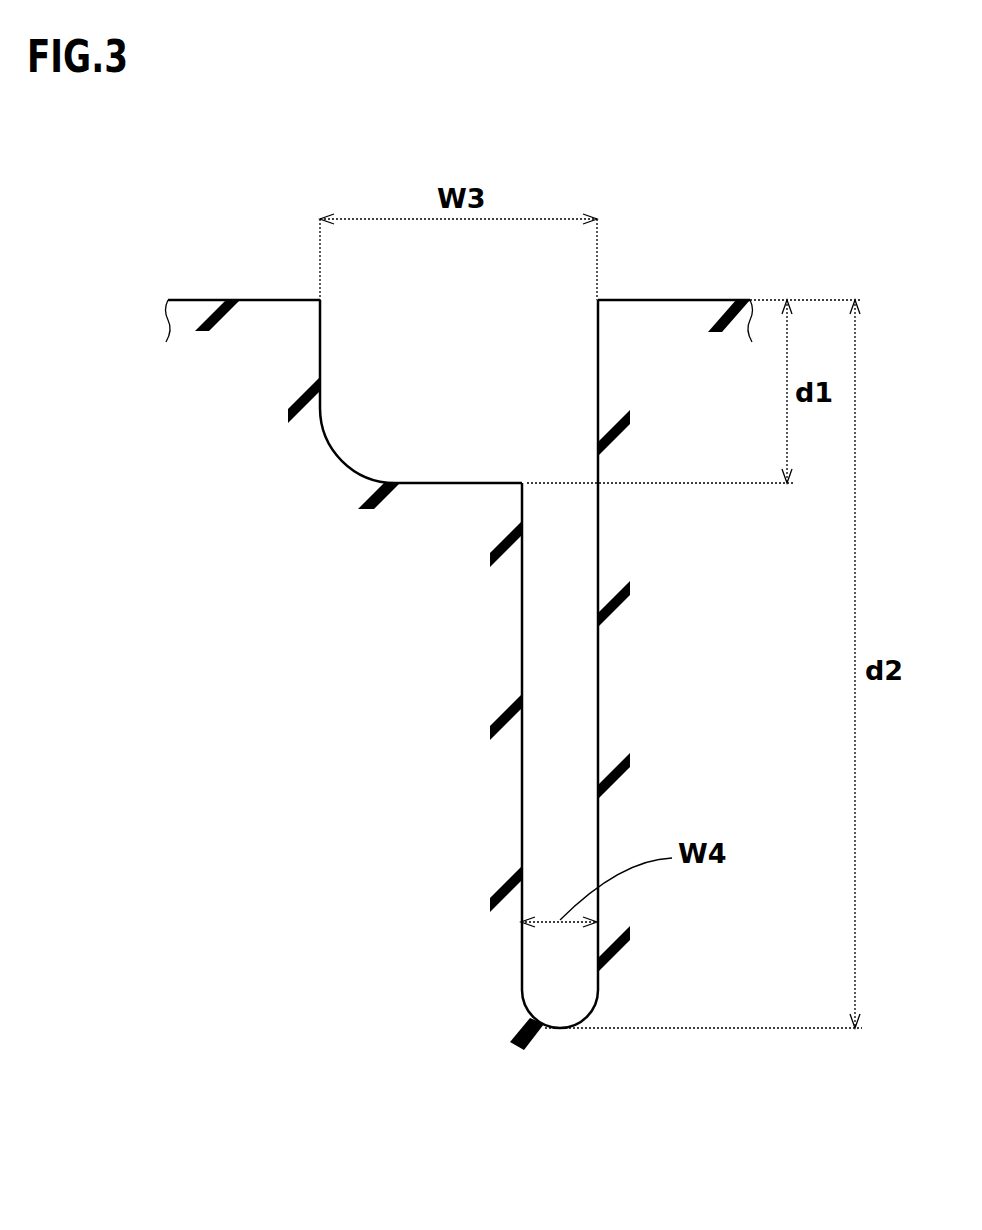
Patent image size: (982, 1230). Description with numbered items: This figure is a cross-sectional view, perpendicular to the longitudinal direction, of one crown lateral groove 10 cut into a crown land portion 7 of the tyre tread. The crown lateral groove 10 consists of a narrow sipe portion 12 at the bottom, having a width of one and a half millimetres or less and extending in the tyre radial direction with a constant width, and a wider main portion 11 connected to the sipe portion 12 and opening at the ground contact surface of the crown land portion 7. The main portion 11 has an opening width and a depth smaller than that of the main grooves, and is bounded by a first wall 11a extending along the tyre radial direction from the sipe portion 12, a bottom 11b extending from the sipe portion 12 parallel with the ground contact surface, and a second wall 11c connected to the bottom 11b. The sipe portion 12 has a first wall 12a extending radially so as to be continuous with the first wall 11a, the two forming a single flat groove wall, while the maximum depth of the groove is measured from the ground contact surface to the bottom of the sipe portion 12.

The crown land portion 7 is at (205, 292).
The crown lateral groove 10 is at (442, 637).
The main portion 11 is at (399, 381).
The first wall of the main portion 11a is at (596, 352).
The bottom of the main portion 11b is at (440, 483).
The second wall of the main portion 11c is at (322, 352).
The sipe portion 12 is at (473, 755).
The first wall of the sipe portion 12a is at (597, 697).